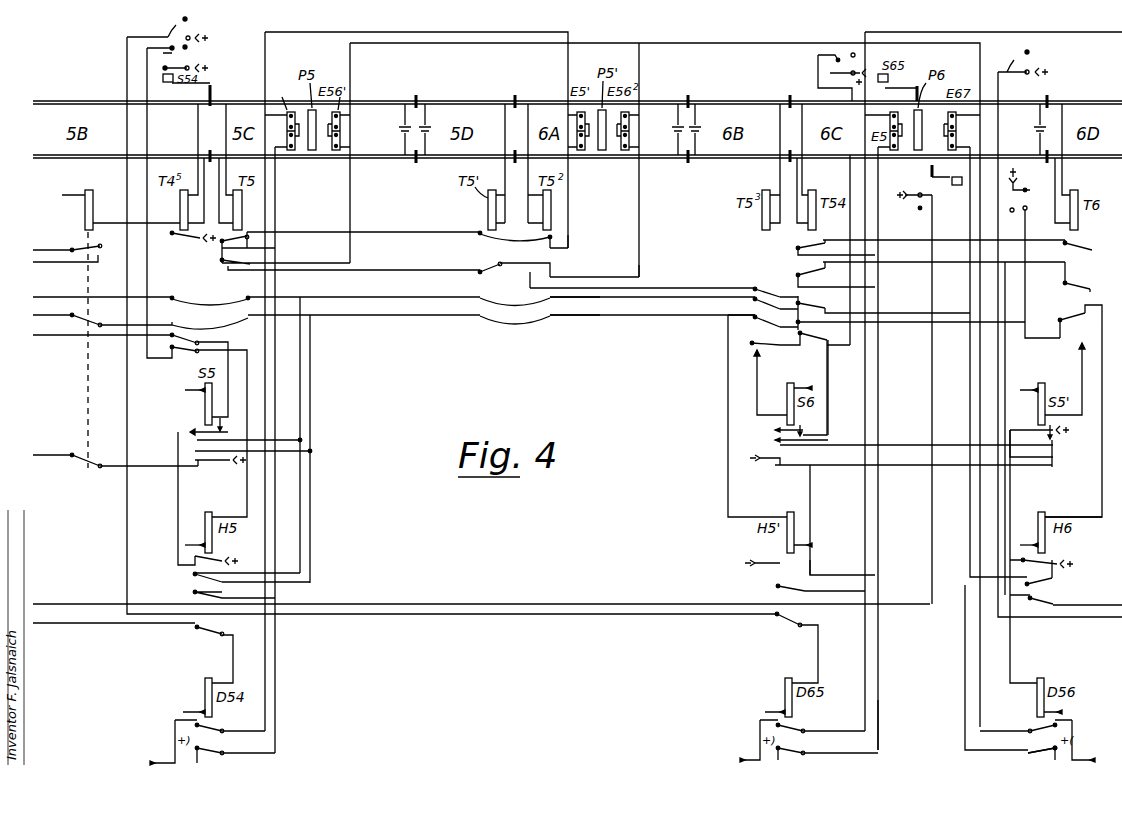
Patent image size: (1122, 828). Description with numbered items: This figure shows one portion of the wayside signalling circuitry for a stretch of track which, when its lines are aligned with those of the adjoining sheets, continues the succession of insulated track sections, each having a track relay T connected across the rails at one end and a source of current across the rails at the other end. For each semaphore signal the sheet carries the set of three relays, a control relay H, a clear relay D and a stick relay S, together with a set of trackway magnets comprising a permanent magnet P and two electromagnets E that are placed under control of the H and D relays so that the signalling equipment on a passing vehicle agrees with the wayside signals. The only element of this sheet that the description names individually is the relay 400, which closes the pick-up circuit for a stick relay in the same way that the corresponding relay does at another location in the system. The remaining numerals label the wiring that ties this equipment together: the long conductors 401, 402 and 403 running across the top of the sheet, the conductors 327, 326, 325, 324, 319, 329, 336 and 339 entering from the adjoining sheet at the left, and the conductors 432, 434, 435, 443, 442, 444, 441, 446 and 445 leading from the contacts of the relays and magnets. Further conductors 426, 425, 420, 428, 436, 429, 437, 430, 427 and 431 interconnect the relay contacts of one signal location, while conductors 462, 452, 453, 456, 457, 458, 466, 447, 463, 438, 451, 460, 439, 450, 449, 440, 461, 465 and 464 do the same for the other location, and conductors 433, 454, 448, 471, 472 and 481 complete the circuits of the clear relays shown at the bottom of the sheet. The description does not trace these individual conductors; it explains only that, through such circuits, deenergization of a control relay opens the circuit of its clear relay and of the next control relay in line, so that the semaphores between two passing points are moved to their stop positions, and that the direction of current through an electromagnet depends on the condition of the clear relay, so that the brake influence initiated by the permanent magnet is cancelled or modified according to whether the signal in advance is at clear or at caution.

The circuit wire 401 is at (410, 32).
The circuit wire 402 is at (1102, 32).
The circuit wire 403 is at (720, 52).
The relay 400 is at (85, 209).
The wire 432 is at (126, 171).
The conductor 327 is at (67, 241).
The conductor 326 is at (65, 266).
The conductor 325 is at (394, 293).
The conductor 324 is at (394, 313).
The conductor 319 is at (130, 375).
The conductor 329 is at (67, 453).
The conductor 336 is at (481, 596).
The conductor 339 is at (133, 653).
The wire 434 is at (275, 232).
The wire 435 is at (280, 256).
The wire 443 is at (350, 196).
The wire 442 is at (408, 252).
The wire 444 is at (411, 269).
The wire 441 is at (568, 232).
The wire 446 is at (639, 234).
The wire 445 is at (690, 287).
The wire 426 is at (288, 298).
The contact 425 is at (162, 326).
The wire 420 is at (224, 342).
The wire 428 is at (312, 470).
The wire 436 is at (368, 318).
The wire 429 is at (624, 294).
The wire 437 is at (605, 316).
The wire 430 is at (728, 356).
The wire 427 is at (295, 440).
The wire 431 is at (164, 466).
The wire 462 is at (850, 172).
The wire 452 is at (922, 245).
The wire 453 is at (953, 239).
The wire 456 is at (878, 275).
The wire 457 is at (955, 262).
The wire 458 is at (1095, 279).
The wire 466 is at (1076, 402).
The wire 447 is at (915, 322).
The wire 463 is at (758, 372).
The wire 438 is at (828, 380).
The wire 451 is at (1005, 384).
The wire 460 is at (1082, 362).
The wire 439' 439 is at (914, 445).
The wire 450 is at (914, 470).
The wire 449 is at (810, 491).
The wire 440 is at (1022, 487).
The wire 461 is at (1012, 502).
The wire 465 is at (1102, 502).
The wire 464 is at (818, 552).
The wire 433 is at (818, 654).
The wire 454 is at (878, 712).
The wire 448 is at (965, 622).
The wire 471 is at (1010, 654).
The wire 472 is at (1087, 597).
The wire 481 is at (998, 148).